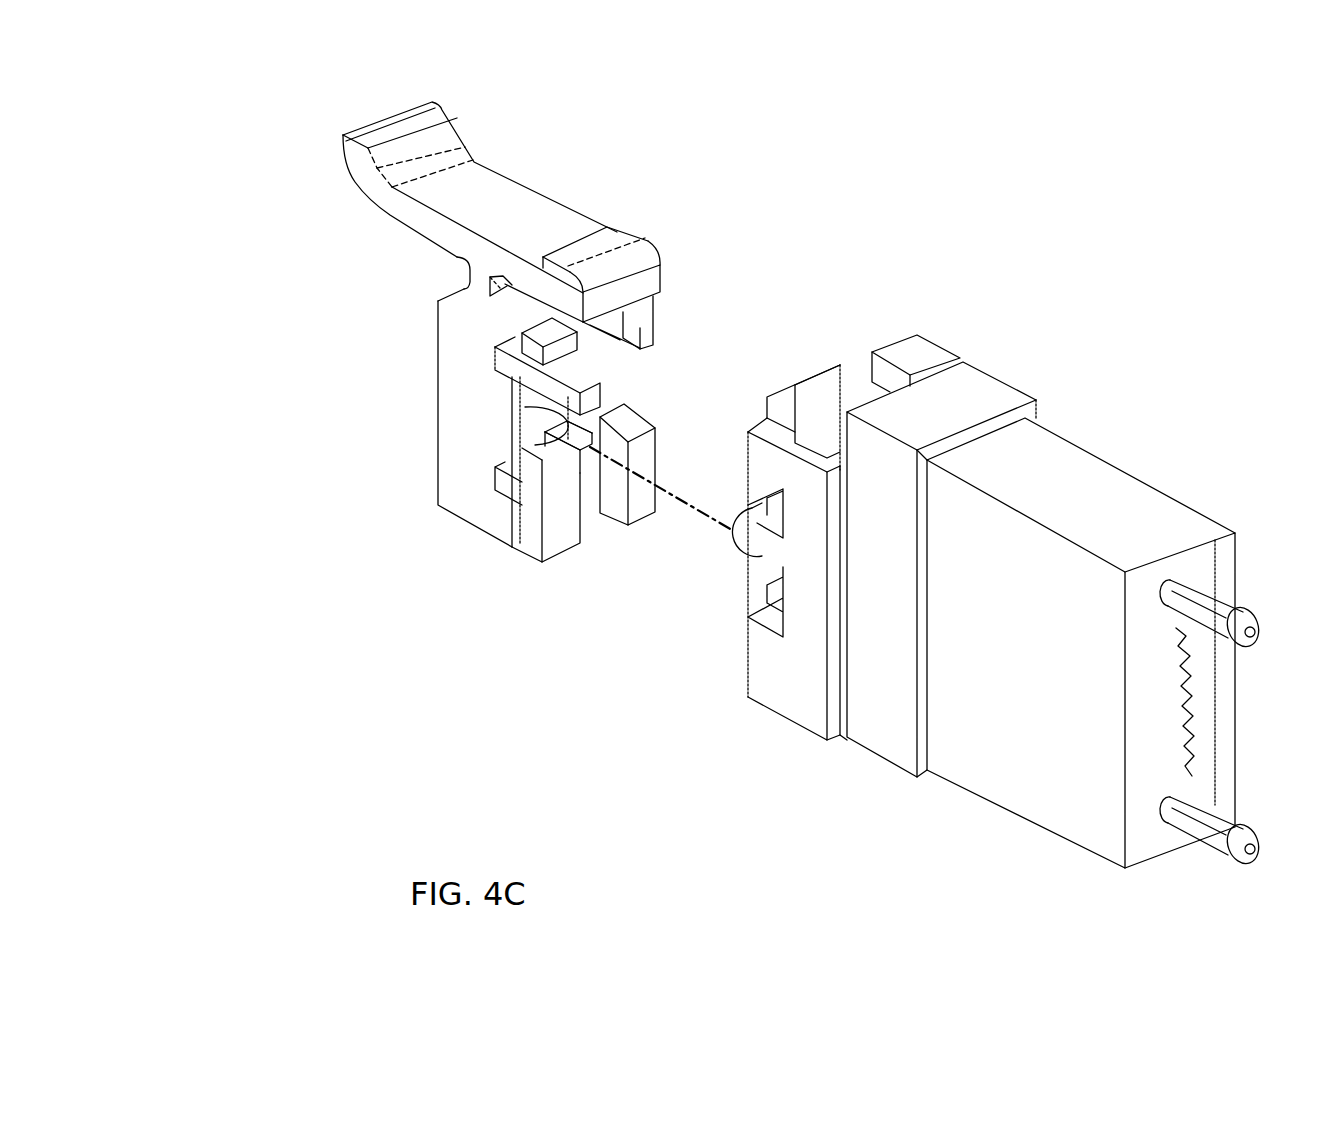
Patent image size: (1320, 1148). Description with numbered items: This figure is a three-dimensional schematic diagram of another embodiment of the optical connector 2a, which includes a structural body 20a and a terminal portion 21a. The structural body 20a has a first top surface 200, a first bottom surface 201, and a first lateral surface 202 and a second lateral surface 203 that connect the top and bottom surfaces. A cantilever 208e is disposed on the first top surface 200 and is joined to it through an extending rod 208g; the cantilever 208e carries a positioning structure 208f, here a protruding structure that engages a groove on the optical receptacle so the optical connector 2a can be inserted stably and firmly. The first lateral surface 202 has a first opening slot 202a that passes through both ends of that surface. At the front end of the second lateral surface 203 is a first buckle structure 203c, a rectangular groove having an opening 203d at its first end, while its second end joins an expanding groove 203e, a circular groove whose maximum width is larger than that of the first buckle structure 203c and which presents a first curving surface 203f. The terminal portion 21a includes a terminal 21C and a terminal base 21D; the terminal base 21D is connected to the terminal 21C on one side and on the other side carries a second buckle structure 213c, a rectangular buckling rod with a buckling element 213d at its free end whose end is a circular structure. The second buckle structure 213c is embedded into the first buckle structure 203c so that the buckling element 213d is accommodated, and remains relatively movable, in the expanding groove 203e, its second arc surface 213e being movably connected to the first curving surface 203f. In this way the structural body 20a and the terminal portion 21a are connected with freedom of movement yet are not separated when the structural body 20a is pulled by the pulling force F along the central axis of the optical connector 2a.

The pulling force F is at (327, 292).
The optical connector 2a is at (1074, 211).
The structural body 20a is at (622, 280).
The terminal portion 21a is at (1090, 427).
The terminal 21C is at (1000, 757).
The terminal base 21D is at (799, 728).
The first top surface 200 is at (513, 310).
The first bottom surface 201 is at (485, 533).
The first lateral surface 202 is at (713, 375).
The first opening slot 202a is at (620, 423).
The second lateral surface 203 is at (470, 393).
The first buckle structure 203c is at (557, 447).
The opening 203d is at (583, 443).
The expanding groove 203e is at (555, 445).
The first curving surface 203f is at (540, 424).
The cantilever 208e is at (485, 185).
The positioning structure 208f is at (615, 240).
The extending rod 208g is at (472, 282).
The second buckle structure 213c is at (763, 547).
The buckling element 213d is at (747, 528).
The second arc surface 213e is at (738, 552).